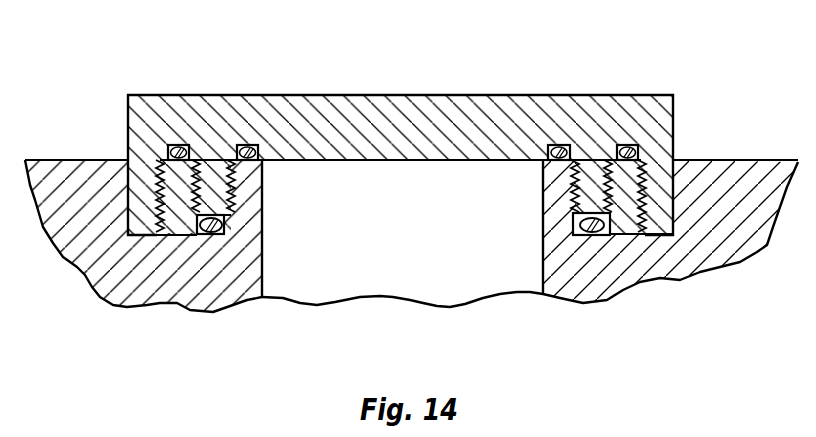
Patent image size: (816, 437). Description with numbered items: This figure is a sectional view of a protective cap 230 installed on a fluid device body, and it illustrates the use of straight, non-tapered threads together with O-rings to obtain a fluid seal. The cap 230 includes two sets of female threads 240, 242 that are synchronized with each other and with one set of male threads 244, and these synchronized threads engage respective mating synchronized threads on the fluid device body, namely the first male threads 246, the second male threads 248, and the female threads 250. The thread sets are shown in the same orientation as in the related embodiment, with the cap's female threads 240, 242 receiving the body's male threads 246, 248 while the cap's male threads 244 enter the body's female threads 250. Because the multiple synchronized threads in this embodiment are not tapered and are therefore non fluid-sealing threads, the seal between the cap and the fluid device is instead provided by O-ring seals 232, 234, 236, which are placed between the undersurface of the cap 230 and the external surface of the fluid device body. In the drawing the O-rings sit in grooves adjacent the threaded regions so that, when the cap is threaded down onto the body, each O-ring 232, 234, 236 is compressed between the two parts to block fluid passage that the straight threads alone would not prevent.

The protective cap 230 is at (403, 130).
The O-ring seal 232 is at (179, 145).
The O-ring seal 234 is at (173, 275).
The O-ring seal 236 is at (245, 146).
The female threads 240 is at (612, 172).
The female threads 242 is at (640, 200).
The male threads 244 is at (573, 195).
The first male threads 246 is at (157, 197).
The second male threads 248 is at (196, 197).
The female threads 250 is at (230, 188).